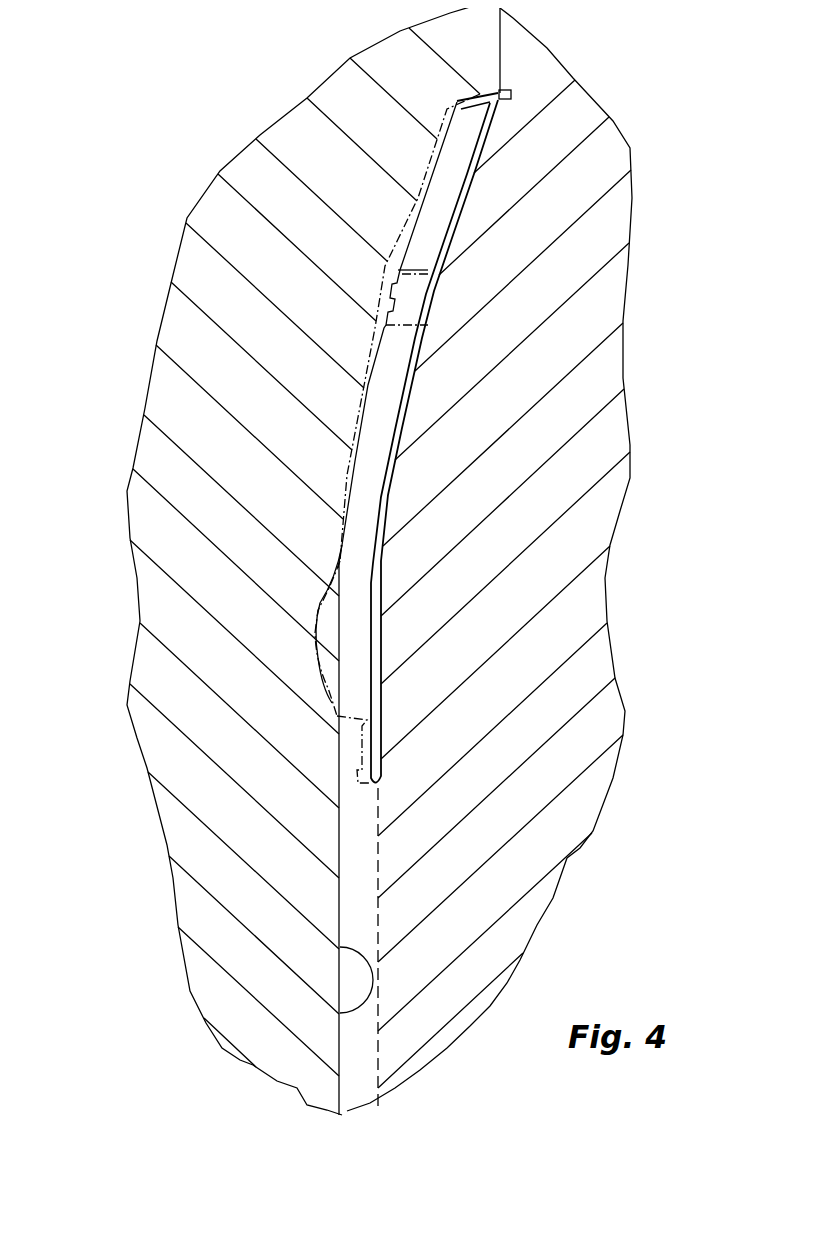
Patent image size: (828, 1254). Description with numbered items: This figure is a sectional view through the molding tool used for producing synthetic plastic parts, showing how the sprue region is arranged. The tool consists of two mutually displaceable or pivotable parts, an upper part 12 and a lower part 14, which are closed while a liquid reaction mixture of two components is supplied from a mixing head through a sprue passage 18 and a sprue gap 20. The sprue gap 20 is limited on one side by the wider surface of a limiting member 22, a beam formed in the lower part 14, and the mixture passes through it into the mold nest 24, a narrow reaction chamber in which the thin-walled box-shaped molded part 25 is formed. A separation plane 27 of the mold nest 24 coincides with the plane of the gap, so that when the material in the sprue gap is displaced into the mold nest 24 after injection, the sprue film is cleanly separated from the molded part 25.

The upper part 12 is at (580, 382).
The lower part 14 is at (200, 560).
The sprue passage 18 is at (355, 858).
The sprue gap 20 is at (385, 533).
The limiting member 22 is at (378, 475).
The mold nest 24 is at (317, 643).
The molded part 25 is at (314, 729).
The separation plane 27 is at (477, 97).